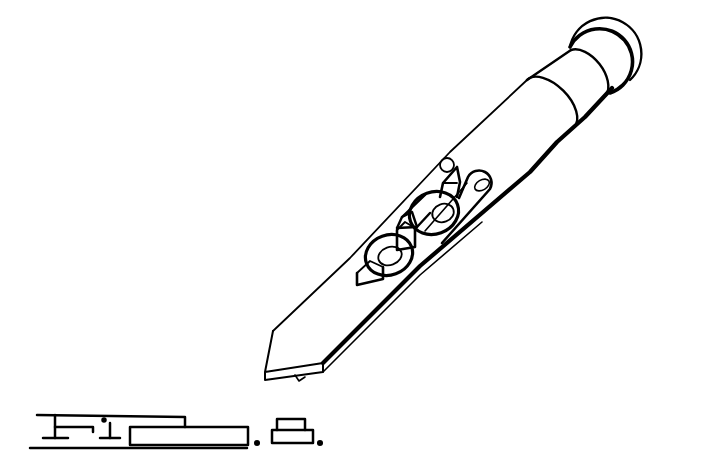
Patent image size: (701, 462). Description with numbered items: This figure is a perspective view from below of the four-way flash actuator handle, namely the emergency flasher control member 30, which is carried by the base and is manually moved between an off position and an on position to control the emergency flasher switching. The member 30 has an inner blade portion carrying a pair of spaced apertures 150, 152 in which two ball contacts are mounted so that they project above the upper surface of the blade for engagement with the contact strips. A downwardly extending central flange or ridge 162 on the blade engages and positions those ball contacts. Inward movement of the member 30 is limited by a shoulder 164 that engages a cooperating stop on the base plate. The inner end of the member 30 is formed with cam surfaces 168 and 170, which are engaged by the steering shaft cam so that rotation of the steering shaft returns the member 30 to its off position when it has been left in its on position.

The emergency flasher control member 30 is at (560, 138).
The aperture 150 is at (415, 267).
The aperture 152 is at (466, 225).
The central flange or ridge 162 is at (403, 210).
The shoulder 164 is at (485, 188).
The cam surface 168 is at (270, 342).
The cam surface 170 is at (298, 384).